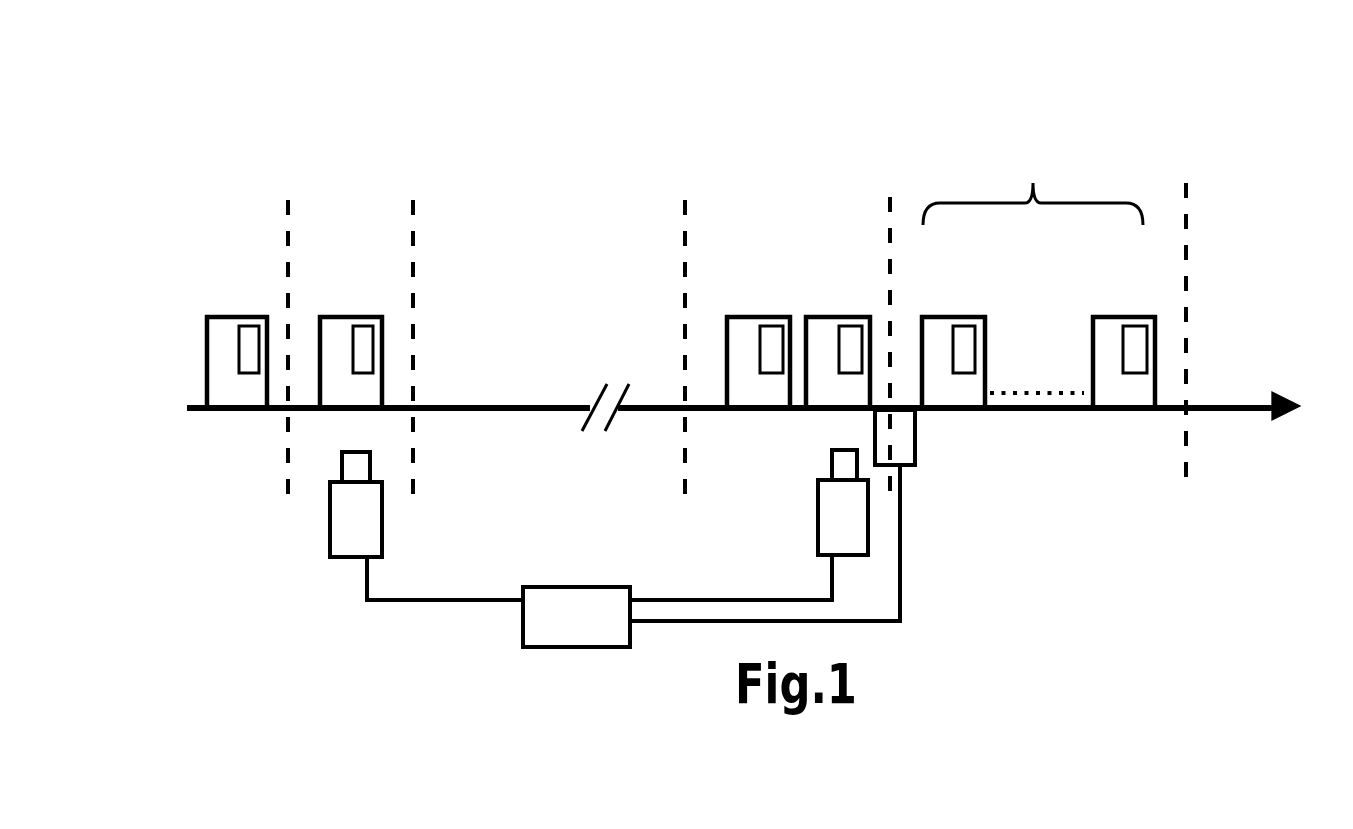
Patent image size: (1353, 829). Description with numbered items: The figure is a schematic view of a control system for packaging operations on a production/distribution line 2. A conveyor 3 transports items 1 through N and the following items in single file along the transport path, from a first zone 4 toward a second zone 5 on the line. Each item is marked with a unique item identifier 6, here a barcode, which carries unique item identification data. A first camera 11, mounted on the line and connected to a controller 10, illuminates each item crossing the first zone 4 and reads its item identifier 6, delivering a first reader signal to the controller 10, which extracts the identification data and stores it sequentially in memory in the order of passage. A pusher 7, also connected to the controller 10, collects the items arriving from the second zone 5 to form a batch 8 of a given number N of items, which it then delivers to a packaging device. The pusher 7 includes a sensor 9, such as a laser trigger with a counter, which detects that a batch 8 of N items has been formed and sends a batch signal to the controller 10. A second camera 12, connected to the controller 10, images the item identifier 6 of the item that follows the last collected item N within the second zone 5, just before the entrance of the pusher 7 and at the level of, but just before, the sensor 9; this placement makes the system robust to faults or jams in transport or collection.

The item 1 is at (1118, 313).
The production/distribution line 2 is at (753, 135).
The conveyor 3 is at (517, 412).
The first zone 4 is at (345, 235).
The second zone 5 is at (800, 222).
The unique item identifier 6 is at (253, 338).
The pusher 7 is at (1027, 442).
The batch 8 is at (1033, 182).
The sensor 9 is at (890, 442).
The controller 10 is at (521, 630).
The first camera 11 is at (350, 507).
The second camera 12 is at (828, 497).
The item of rank N is at (960, 313).